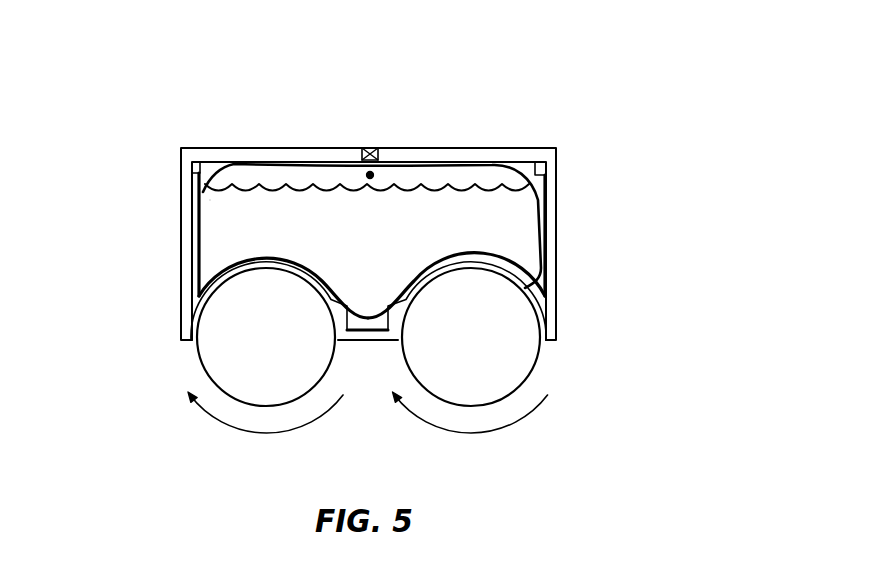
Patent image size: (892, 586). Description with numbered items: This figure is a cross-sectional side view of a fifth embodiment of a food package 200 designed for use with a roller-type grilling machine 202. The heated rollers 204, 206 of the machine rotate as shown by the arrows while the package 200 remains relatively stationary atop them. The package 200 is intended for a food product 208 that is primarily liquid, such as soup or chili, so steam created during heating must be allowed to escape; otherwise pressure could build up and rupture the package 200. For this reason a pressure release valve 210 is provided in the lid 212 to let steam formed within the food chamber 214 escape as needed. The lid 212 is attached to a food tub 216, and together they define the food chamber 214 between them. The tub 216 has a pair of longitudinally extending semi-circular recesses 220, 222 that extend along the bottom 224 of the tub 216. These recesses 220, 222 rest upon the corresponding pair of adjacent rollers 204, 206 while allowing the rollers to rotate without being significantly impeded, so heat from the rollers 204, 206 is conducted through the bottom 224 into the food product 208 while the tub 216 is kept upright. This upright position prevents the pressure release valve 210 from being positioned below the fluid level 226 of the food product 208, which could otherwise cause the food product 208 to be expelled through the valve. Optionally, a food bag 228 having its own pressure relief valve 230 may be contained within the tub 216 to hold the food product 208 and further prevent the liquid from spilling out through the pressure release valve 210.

The package 200 is at (478, 93).
The roller-type grilling machine 202 is at (591, 360).
The heated roller 204 is at (200, 364).
The heated roller 206 is at (535, 371).
The food product 208 is at (518, 222).
The pressure release valve 210 is at (370, 148).
The lid 212 is at (200, 148).
The food chamber 214 is at (198, 187).
The food tub 216 is at (550, 305).
The semi-circular recess 220 is at (280, 258).
The semi-circular recess 222 is at (462, 263).
The bottom 224 is at (370, 342).
The fluid level 226 is at (497, 183).
The food bag 228 is at (552, 183).
The pressure relief valve 230 is at (368, 174).